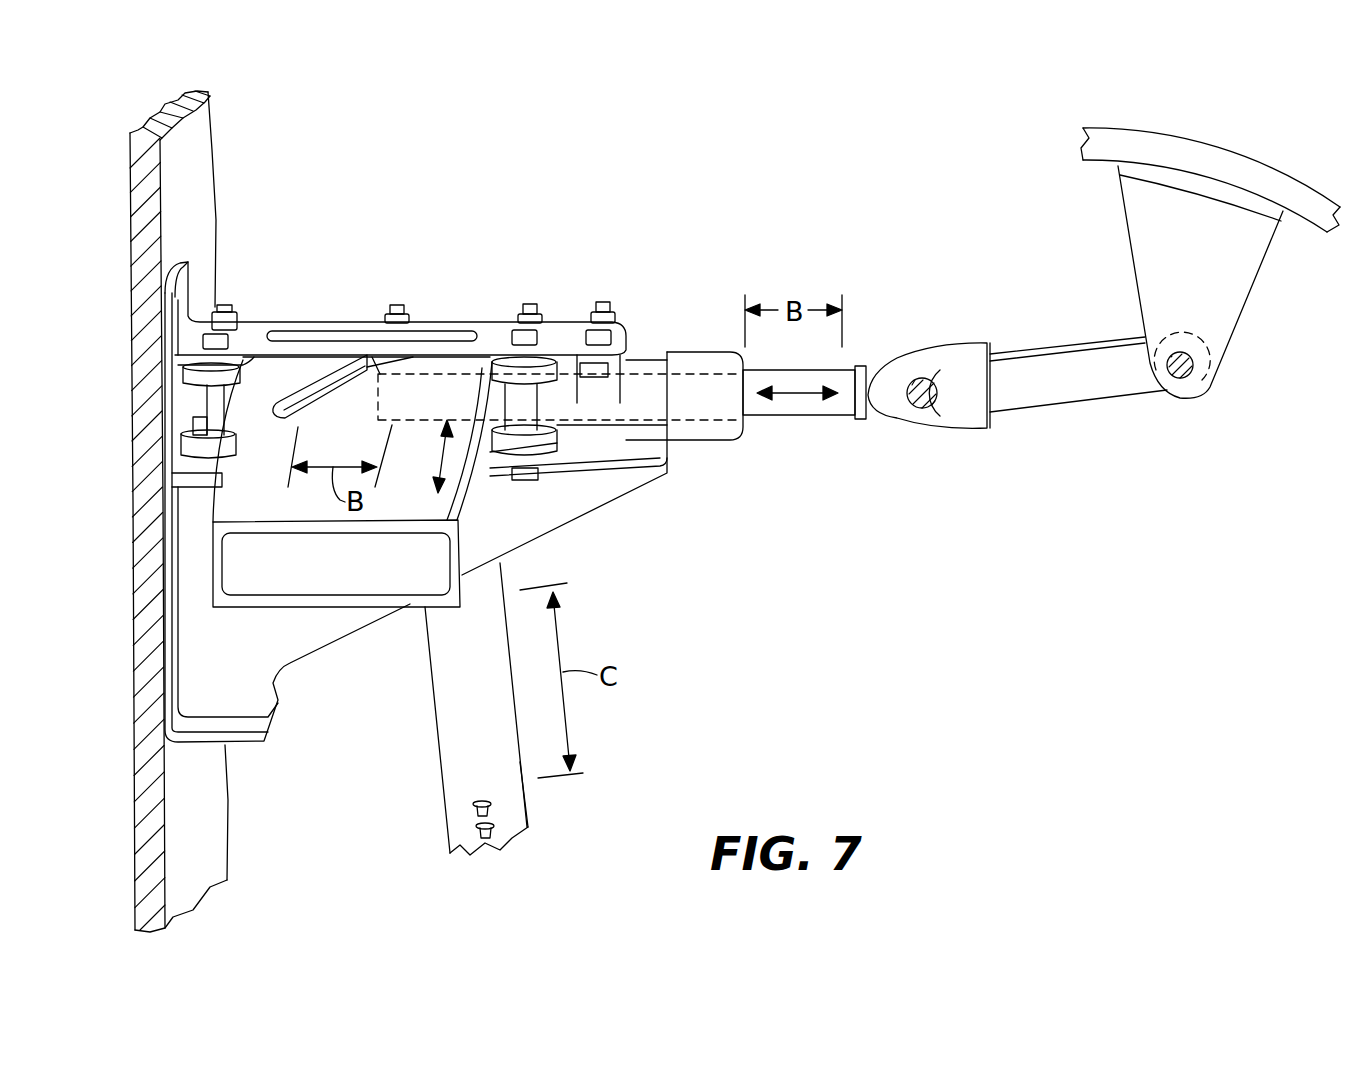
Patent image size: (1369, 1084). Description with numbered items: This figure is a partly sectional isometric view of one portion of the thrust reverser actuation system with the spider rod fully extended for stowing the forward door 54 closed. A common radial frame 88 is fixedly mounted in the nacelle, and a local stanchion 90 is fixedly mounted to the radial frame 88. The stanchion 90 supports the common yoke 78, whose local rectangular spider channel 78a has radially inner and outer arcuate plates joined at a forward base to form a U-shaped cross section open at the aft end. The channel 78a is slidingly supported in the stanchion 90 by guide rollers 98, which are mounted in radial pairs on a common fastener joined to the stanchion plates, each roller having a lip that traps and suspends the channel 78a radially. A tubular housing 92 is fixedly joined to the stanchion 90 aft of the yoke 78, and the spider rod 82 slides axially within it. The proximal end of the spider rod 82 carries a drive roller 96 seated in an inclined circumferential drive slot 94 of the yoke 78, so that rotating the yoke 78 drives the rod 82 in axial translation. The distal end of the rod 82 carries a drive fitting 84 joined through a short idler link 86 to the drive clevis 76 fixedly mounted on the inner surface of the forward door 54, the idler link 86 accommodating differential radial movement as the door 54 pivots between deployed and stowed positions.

The forward door 54 is at (1157, 130).
The drive clevis 76 is at (1211, 267).
The yoke 78 is at (433, 714).
The spider channel 78a is at (350, 583).
The spider rod 82 is at (782, 418).
The drive fitting 84 is at (884, 414).
The idler link 86 is at (1077, 405).
The radial frame 88 is at (210, 842).
The stanchion 90 is at (247, 671).
The tubular housing 92 is at (643, 357).
The drive slot 94 is at (325, 378).
The drive roller 96 is at (372, 362).
The guide roller 98 is at (190, 372).